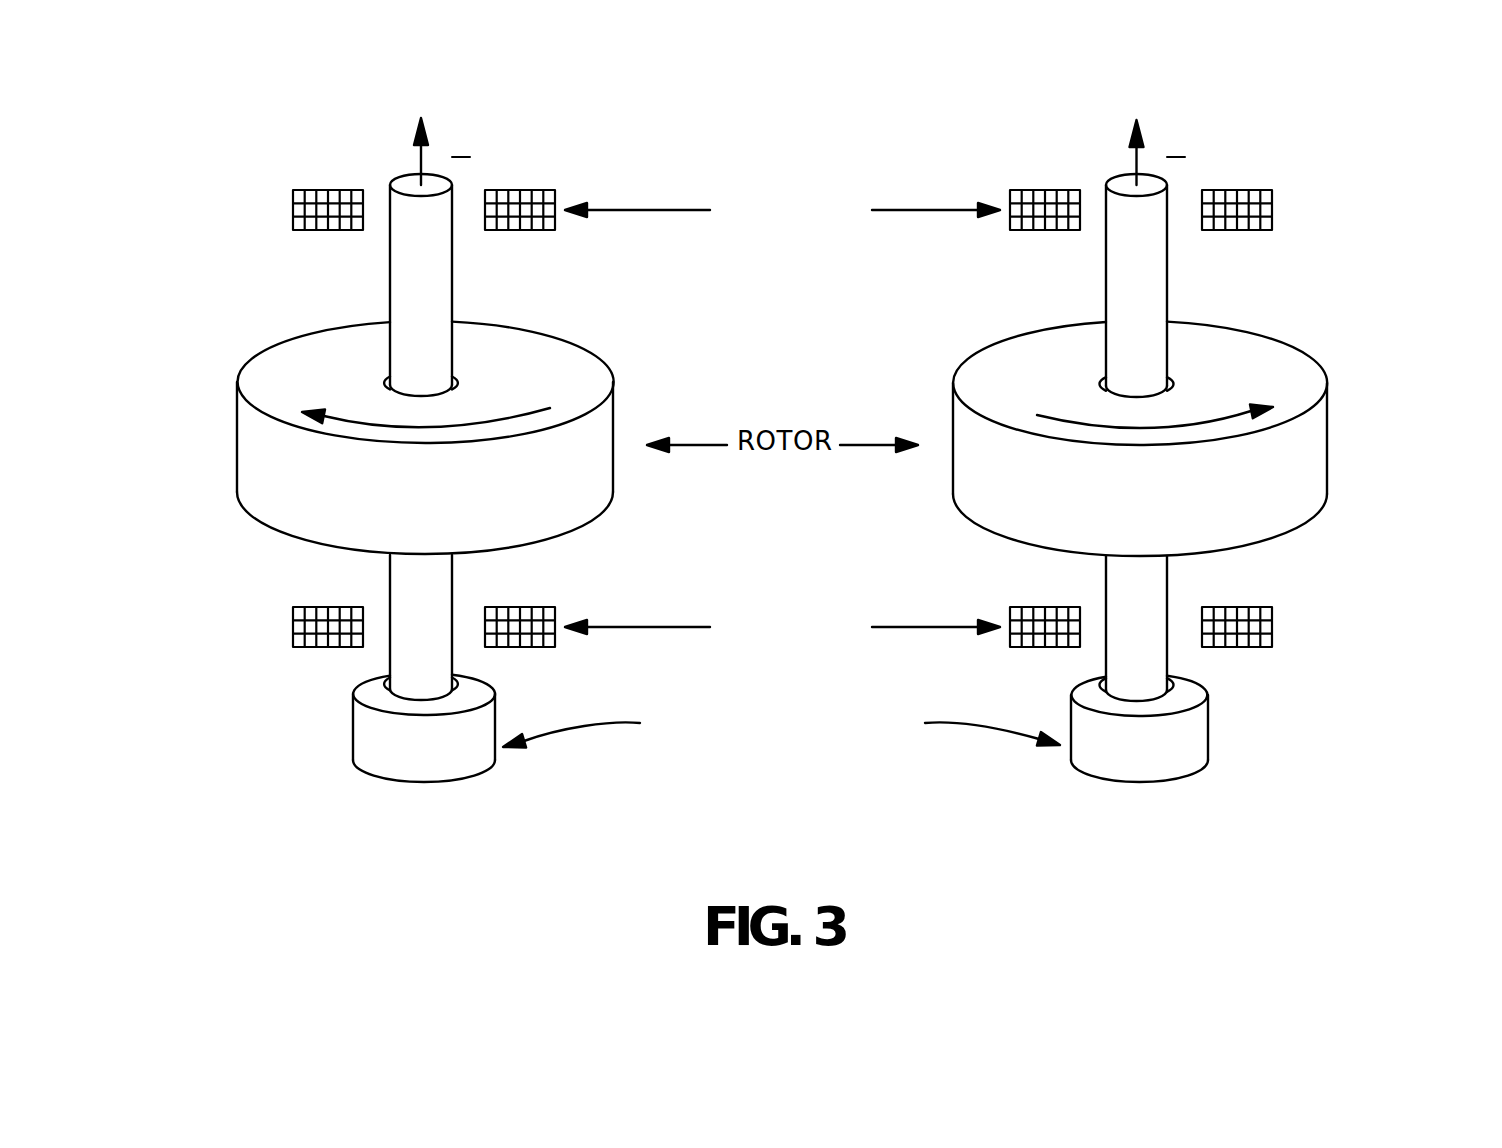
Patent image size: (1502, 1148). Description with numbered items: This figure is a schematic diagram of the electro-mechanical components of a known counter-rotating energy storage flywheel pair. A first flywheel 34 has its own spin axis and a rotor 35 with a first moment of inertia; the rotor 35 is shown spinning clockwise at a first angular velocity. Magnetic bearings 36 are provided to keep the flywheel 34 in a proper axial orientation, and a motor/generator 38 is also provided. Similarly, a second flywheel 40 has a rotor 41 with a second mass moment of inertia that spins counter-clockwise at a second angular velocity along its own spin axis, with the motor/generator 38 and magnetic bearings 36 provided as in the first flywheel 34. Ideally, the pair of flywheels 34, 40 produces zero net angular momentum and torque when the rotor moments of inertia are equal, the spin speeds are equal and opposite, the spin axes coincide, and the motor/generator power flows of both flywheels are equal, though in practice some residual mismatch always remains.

The first flywheel 34 is at (184, 473).
The rotor 35 is at (642, 381).
The magnetic bearings 36 is at (293, 207).
The motor/generator 38 is at (353, 760).
The second flywheel 40 is at (1380, 437).
The rotor 41 is at (939, 345).